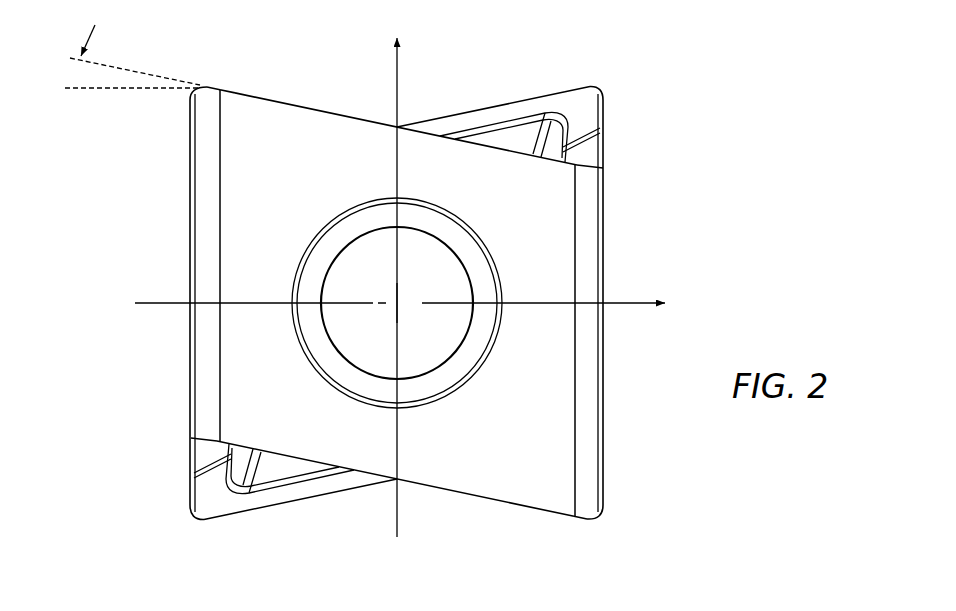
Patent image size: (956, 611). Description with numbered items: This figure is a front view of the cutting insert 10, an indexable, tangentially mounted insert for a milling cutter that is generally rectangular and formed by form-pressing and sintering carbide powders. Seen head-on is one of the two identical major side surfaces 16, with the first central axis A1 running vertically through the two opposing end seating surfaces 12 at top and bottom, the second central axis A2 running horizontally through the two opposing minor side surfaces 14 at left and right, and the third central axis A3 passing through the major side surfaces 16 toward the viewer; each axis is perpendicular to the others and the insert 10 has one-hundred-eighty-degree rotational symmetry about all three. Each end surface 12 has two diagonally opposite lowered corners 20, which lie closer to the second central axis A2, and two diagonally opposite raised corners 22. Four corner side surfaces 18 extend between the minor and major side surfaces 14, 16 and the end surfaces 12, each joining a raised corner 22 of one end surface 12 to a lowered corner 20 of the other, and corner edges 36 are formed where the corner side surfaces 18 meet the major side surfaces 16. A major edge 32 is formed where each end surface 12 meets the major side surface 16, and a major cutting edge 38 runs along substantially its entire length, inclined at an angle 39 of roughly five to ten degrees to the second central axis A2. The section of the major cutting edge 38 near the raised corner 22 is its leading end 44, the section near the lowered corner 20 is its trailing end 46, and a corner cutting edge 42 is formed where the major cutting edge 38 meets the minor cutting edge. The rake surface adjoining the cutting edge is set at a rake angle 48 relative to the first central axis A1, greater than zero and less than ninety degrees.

The cutting insert 10 is at (735, 47).
The end seating surface 12 is at (445, 106).
The minor side surface 14 is at (184, 173).
The major side surface 16 is at (490, 459).
The corner side surface 18 is at (217, 375).
The lowered corner 20 is at (611, 167).
The raised corner 22 is at (200, 81).
The major edge 32 is at (281, 96).
The corner edge 36 is at (220, 252).
The major cutting edge 38 is at (300, 104).
The angle 39 is at (79, 94).
The corner cutting edge 42 is at (208, 86).
The leading end 44 is at (233, 90).
The trailing end 46 is at (463, 135).
The rake angle 48 is at (291, 456).
The first central axis A1 is at (399, 272).
The second central axis A2 is at (417, 303).
The third central axis A3 is at (400, 300).